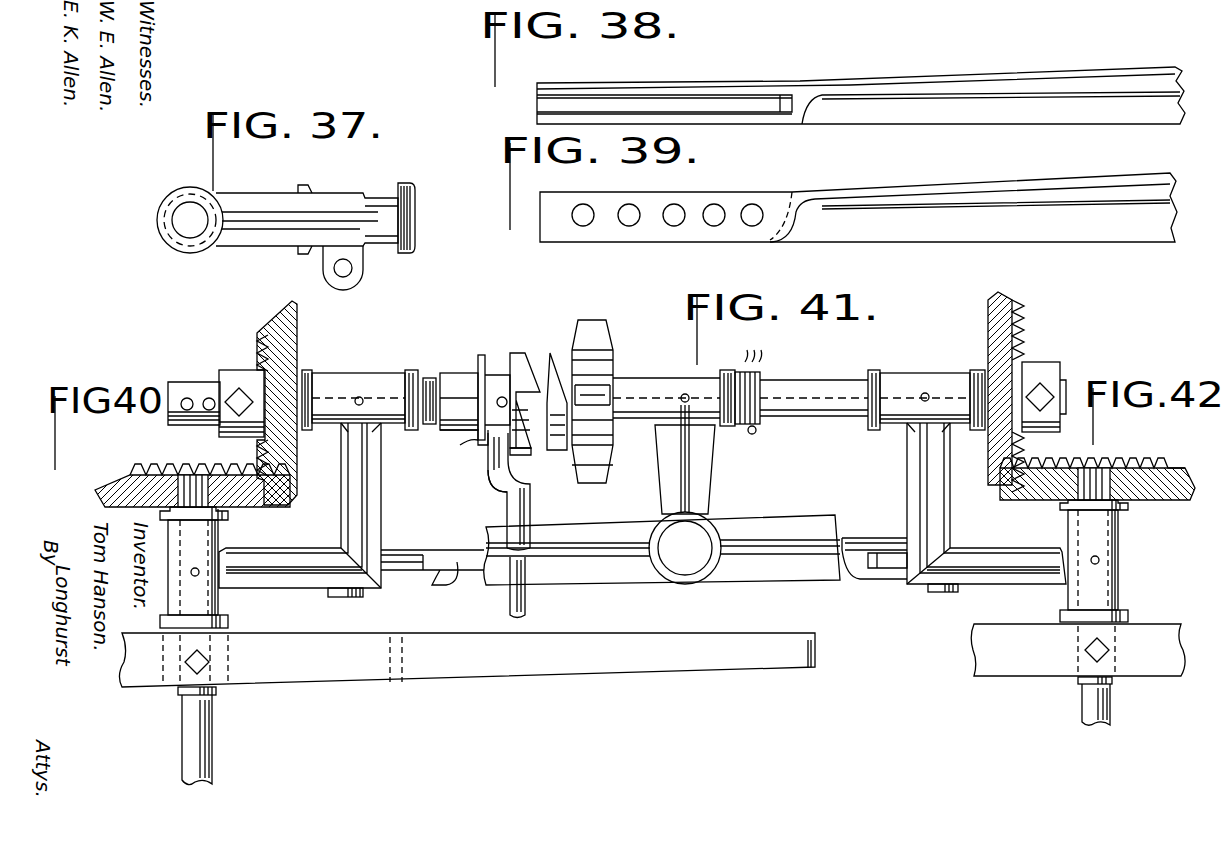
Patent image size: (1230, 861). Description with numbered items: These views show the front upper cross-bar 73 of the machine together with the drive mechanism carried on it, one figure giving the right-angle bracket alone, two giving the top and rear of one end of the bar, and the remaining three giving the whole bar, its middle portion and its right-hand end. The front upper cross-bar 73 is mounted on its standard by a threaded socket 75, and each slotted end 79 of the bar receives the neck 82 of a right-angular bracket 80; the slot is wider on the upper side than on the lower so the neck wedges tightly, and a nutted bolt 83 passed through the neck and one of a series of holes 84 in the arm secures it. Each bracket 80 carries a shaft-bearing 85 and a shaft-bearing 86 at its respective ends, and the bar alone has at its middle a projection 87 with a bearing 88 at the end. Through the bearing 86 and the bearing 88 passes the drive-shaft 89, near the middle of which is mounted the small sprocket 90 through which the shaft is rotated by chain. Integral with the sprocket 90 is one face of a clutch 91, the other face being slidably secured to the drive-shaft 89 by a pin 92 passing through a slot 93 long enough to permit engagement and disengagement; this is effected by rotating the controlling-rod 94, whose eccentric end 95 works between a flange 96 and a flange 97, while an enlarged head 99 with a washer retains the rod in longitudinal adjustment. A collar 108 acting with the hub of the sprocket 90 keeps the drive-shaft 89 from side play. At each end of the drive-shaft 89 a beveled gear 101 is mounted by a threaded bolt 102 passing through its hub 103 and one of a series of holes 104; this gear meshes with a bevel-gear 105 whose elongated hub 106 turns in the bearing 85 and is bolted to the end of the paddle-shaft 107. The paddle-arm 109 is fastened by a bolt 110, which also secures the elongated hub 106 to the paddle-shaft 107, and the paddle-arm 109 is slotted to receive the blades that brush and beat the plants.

In FIG. 38, the front upper cross-bar 73 is at (861, 95).
In FIG. 39, the front upper cross-bar 73 is at (973, 207).
In FIG. 41, the front upper cross-bar 73 is at (662, 551).
In FIG. 41, the threaded socket 75 is at (685, 548).
In FIG. 38, the slotted ends 79 is at (538, 105).
In FIG. 39, the slotted ends 79 is at (666, 231).
In FIG. 40, the slotted ends 79 is at (402, 556).
In FIG. 41, the slotted ends 79 is at (878, 545).
In FIG. 37, the bracket 80 is at (258, 197).
In FIG. 40, the bracket 80 is at (300, 505).
In FIG. 42, the bracket 80 is at (986, 503).
In FIG. 37, the neck 82 is at (363, 283).
In FIG. 40, the nutted bolt 83 is at (348, 596).
In FIG. 42, the nutted bolt 83 is at (945, 592).
In FIG. 39, the holes 84 is at (751, 207).
In FIG. 37, the shaft-bearing 85 is at (158, 220).
In FIG. 40, the shaft-bearing 85 is at (226, 538).
In FIG. 42, the shaft-bearing 85 is at (1119, 563).
In FIG. 37, the shaft-bearing 86 is at (415, 218).
In FIG. 40, the shaft-bearing 86 is at (360, 390).
In FIG. 41, the shaft-bearing 86 is at (926, 389).
In FIG. 41, the projection 87 is at (707, 471).
In FIG. 41, the bearing 88 is at (665, 378).
In FIG. 41, the drive-shaft 89 is at (830, 384).
In FIG. 41, the small sprocket 90 is at (611, 341).
In FIG. 41, the clutch 91 is at (560, 385).
In FIG. 41, the pin 92 is at (502, 397).
In FIG. 41, the slot 93 is at (487, 405).
In FIG. 41, the controlling-rod 94 is at (526, 601).
In FIG. 41, the eccentric end 95 is at (490, 479).
In FIG. 41, the flange 96 is at (481, 450).
In FIG. 41, the flange 97 is at (522, 457).
In FIG. 41, the enlarged head 99 is at (531, 513).
In FIG. 40, the beveled gear 101 is at (268, 319).
In FIG. 42, the beveled gear 101 is at (1020, 322).
In FIG. 40, the threaded bolt 102 is at (236, 396).
In FIG. 42, the threaded bolt 102 is at (1041, 390).
In FIG. 40, the hub 103 is at (221, 380).
In FIG. 42, the hub 103 is at (1063, 378).
In FIG. 40, the holes 104 is at (185, 397).
In FIG. 40, the bevel-gear 105 is at (168, 462).
In FIG. 42, the bevel-gear 105 is at (1150, 448).
In FIG. 40, the elongated hub 106 is at (180, 694).
In FIG. 42, the elongated hub 106 is at (1113, 680).
In FIG. 40, the paddle-shaft 107 is at (214, 718).
In FIG. 42, the paddle-shaft 107 is at (1082, 696).
In FIG. 41, the collar 108 is at (729, 386).
In FIG. 40, the paddle-arm 109 is at (467, 660).
In FIG. 42, the paddle-arm 109 is at (1078, 650).
In FIG. 40, the bolt 110 is at (212, 662).
In FIG. 42, the bolt 110 is at (1086, 652).